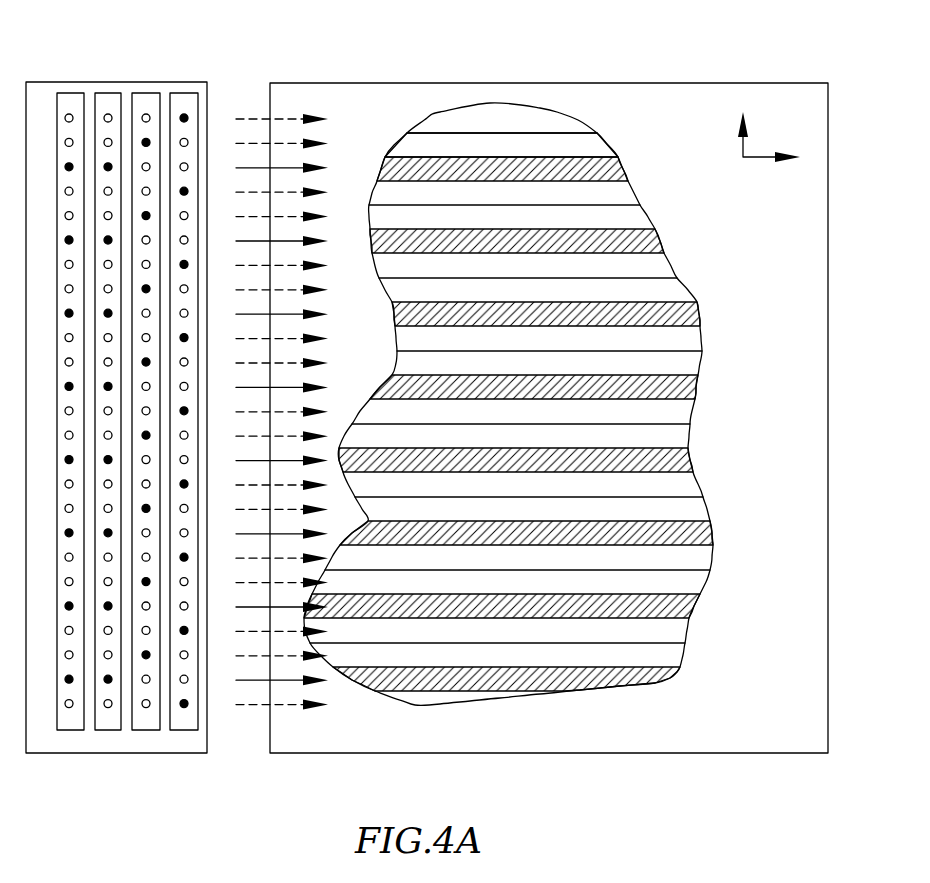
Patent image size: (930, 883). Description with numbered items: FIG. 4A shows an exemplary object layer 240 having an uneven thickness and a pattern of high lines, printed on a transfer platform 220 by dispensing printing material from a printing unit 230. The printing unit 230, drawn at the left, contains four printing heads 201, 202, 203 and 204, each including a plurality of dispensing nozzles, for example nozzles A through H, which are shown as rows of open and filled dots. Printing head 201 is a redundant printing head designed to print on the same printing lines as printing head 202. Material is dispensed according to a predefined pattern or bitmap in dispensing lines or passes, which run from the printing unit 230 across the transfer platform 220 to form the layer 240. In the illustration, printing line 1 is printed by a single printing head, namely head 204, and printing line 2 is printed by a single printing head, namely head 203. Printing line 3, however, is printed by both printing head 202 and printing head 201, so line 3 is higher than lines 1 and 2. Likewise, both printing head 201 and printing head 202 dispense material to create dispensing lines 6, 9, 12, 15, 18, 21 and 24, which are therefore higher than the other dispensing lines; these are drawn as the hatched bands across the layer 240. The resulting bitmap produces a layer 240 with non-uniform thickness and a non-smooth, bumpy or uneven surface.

The printing line 1 is at (560, 113).
The printing line 2 is at (598, 133).
The printing line 3 is at (618, 158).
The dispensing line 6 is at (657, 232).
The dispensing line 9 is at (698, 310).
The dispensing line 12 is at (698, 383).
The dispensing line 15 is at (692, 455).
The dispensing line 18 is at (713, 522).
The dispensing line 21 is at (690, 598).
The dispensing line 24 is at (678, 670).
The printing head 201 is at (72, 93).
The printing head 202 is at (104, 93).
The printing head 203 is at (146, 93).
The printing head 204 is at (184, 93).
The transfer platform 220 is at (706, 753).
The printing unit 230 is at (115, 753).
The layer 240 is at (357, 688).